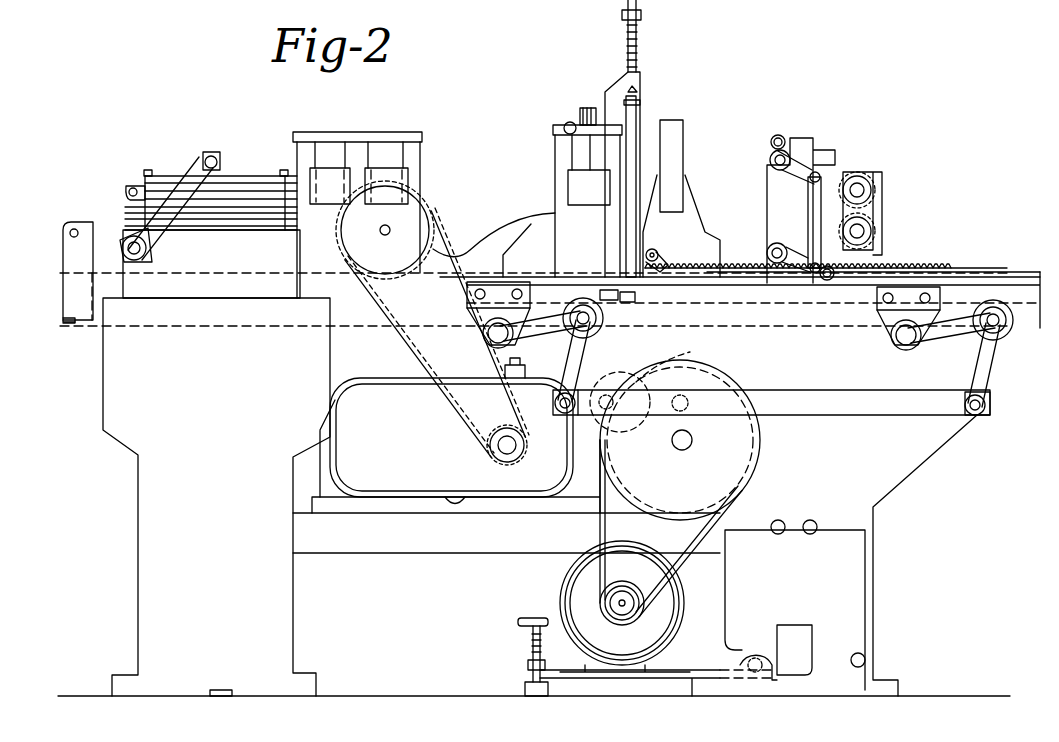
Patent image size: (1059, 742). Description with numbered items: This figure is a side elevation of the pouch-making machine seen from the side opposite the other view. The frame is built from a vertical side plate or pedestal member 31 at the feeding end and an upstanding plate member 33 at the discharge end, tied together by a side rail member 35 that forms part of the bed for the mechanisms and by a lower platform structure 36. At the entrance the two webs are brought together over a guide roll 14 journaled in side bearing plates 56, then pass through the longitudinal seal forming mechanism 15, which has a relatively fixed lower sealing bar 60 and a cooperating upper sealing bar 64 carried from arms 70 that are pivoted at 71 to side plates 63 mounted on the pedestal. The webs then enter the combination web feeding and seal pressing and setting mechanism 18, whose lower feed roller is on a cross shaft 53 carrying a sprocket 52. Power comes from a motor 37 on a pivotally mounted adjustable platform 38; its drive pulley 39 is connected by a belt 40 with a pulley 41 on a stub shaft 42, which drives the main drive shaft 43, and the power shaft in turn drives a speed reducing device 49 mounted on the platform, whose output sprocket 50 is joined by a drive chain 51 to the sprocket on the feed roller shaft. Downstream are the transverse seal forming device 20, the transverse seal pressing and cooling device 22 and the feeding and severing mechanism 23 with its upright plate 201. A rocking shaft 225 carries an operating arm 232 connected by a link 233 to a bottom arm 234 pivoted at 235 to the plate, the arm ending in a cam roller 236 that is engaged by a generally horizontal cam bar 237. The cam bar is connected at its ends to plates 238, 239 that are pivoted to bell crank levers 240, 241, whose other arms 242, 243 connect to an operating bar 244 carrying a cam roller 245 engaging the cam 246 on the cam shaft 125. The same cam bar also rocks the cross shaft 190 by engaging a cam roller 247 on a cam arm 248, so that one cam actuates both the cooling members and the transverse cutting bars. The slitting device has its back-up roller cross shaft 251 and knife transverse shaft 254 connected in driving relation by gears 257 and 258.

The guide roll 14 is at (70, 224).
The longitudinal seal forming mechanism 15 is at (249, 170).
The web feeding and seal pressing and setting mechanism 18 is at (399, 129).
The transverse seal forming device 20 is at (652, 76).
The transverse seal pressing and cooling device 22 is at (688, 119).
The feeding and severing mechanism 23 is at (805, 129).
The side plate or pedestal member 31 is at (140, 512).
The upstanding plate member 33 is at (906, 458).
The side rail member 35 is at (72, 318).
The platform structure 36 is at (418, 552).
The motor 37 is at (560, 573).
The adjustable platform 38 is at (626, 678).
The drive pulley 39 is at (618, 626).
The belt 40 is at (600, 540).
The pulley 41 is at (740, 467).
The stub shaft 42 is at (692, 440).
The main drive shaft 43 is at (690, 395).
The speed reducing device 49 is at (392, 500).
The output sprocket 50 is at (504, 457).
The drive chain 51 is at (398, 333).
The sprocket 52 is at (420, 208).
The cross shaft 53 is at (391, 232).
The side bearing plates 56 is at (66, 248).
The lower sealing bar 60 is at (203, 224).
The side plates 63 is at (218, 300).
The upper sealing bar 64 is at (128, 187).
The arm 70 is at (140, 216).
The pivot 71 is at (125, 249).
The cam shaft 125 is at (620, 372).
The rock shaft 190 is at (655, 250).
The upright plate 201 is at (767, 188).
The rocking shaft 225 is at (770, 160).
The operating arm 232 is at (810, 158).
The link 233 is at (812, 214).
The bottom arm 234 is at (800, 248).
The pivot 235 is at (768, 250).
The cam roller 236 is at (828, 282).
The cam bar 237 is at (800, 322).
The plate 238 is at (493, 290).
The plate 239 is at (888, 332).
The bell crank lever 240 is at (535, 344).
The bell crank lever 241 is at (952, 345).
The bell crank arm 242 is at (563, 372).
The bell crank arm 243 is at (1000, 368).
The operating bar 244 is at (828, 418).
The cam roller 245 is at (555, 416).
The cam 246 is at (640, 356).
The cam roller 247 is at (697, 278).
The cam arm 248 is at (664, 286).
The cross shaft 251 is at (864, 233).
The transverse shaft 254 is at (863, 188).
The gear 257 is at (878, 186).
The gear 258 is at (875, 228).